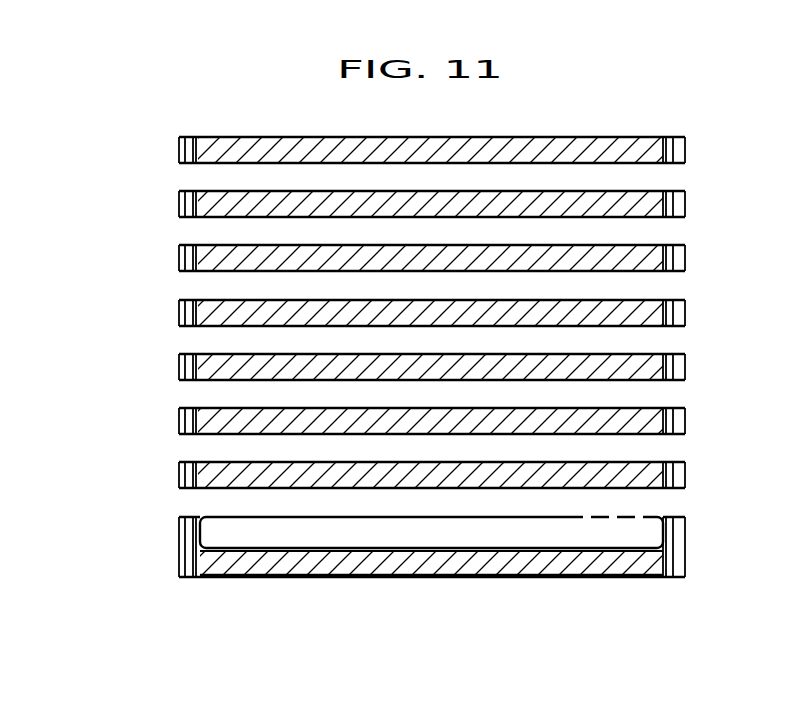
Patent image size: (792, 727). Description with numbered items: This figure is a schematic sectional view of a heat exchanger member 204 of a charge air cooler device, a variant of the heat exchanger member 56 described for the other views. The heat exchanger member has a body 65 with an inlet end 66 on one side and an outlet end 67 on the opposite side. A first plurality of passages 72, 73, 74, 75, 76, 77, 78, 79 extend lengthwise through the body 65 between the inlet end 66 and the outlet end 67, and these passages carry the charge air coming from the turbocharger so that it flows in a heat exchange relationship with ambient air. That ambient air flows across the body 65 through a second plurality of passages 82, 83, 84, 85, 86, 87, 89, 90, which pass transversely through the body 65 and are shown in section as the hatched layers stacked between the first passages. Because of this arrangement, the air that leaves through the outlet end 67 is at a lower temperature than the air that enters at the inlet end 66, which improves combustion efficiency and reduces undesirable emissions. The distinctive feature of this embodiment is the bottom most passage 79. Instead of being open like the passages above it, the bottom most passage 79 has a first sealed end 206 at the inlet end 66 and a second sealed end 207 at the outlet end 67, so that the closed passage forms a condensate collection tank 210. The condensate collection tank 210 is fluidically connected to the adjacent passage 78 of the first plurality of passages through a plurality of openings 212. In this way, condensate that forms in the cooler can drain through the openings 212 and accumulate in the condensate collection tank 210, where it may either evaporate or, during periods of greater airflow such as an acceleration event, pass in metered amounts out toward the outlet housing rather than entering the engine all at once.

The heat exchanger member 204 is at (595, 94).
The heat exchanger member 56 is at (180, 110).
The inlet end 66 is at (138, 143).
The body 65 is at (277, 136).
The passage 72 is at (192, 181).
The passage 73 is at (192, 236).
The passage 74 is at (192, 290).
The passage 75 is at (192, 344).
The passage 76 is at (192, 398).
The passage 77 is at (192, 452).
The passage 78 is at (192, 506).
The passage 82 is at (667, 155).
The passage 83 is at (667, 209).
The passage 84 is at (667, 263).
The passage 85 is at (667, 318).
The passage 86 is at (667, 372).
The passage 87 is at (667, 426).
The passage 89 is at (667, 480).
The first sealed end 206 is at (200, 530).
The second sealed end 207 is at (663, 533).
The bottom most passage 79 is at (242, 533).
The passage 90 is at (300, 562).
The condensate collection tank 210 is at (395, 538).
The openings 212 is at (643, 540).
The outlet end 67 is at (762, 535).